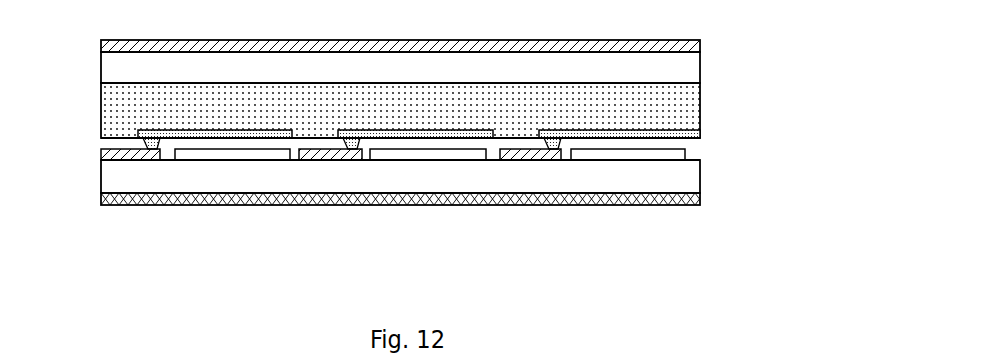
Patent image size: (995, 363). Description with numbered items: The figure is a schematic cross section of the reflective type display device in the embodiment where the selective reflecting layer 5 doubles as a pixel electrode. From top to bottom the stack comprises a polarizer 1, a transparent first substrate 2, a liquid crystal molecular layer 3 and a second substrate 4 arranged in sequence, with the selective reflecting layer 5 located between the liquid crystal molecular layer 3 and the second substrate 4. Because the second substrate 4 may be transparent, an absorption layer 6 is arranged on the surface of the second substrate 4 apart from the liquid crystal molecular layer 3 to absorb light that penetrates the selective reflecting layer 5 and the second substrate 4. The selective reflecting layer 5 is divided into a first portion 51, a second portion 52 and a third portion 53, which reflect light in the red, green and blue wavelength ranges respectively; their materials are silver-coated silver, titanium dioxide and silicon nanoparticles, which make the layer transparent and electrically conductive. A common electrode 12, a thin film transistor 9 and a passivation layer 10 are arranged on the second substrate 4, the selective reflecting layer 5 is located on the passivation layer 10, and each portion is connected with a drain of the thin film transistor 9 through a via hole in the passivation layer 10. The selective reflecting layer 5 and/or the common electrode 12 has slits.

The polarizer 1 is at (667, 44).
The first substrate 2 is at (667, 69).
The liquid crystal molecular layer 3 is at (667, 111).
The second substrate 4 is at (667, 177).
The selective reflecting layer 5 is at (419, 208).
The absorption layer 6 is at (667, 198).
The thin film transistor 9 is at (107, 155).
The passivation layer 10 is at (667, 145).
The common electrode 12 is at (217, 155).
The first portion 51 is at (270, 134).
The second portion 52 is at (408, 131).
The third portion 53 is at (591, 187).